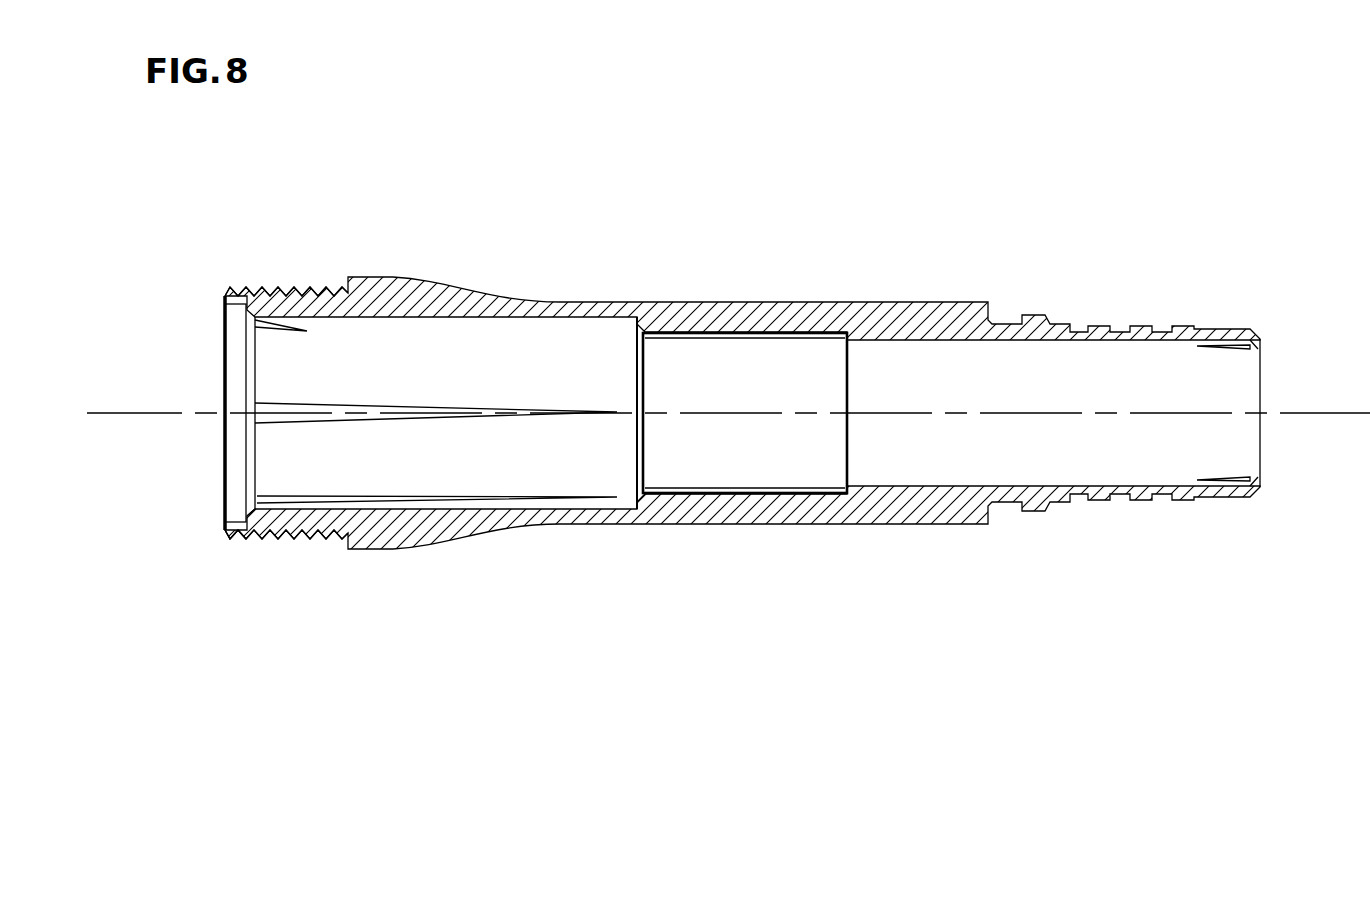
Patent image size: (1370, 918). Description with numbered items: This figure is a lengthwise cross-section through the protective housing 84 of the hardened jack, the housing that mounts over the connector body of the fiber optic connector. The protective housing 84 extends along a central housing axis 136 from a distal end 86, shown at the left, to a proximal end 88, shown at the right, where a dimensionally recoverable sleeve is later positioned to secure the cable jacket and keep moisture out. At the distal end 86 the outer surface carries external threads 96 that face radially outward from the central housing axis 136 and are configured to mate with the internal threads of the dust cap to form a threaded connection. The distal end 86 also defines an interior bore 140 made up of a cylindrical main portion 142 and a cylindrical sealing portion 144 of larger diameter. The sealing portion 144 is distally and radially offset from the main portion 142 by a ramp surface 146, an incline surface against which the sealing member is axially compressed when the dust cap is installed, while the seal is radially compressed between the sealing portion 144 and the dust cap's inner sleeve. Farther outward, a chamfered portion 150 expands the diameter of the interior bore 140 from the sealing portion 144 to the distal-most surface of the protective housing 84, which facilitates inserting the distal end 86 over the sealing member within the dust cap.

The protective housing 84 is at (640, 302).
The external threads 96 is at (280, 287).
The sealing portion 144 is at (237, 473).
The chamfered portion 150 is at (223, 440).
The distal end 86 is at (225, 528).
The ramp surface 146 is at (253, 518).
The interior bore 140 is at (273, 372).
The main portion 142 is at (468, 473).
The proximal end 88 is at (1253, 498).
The central housing axis 136 is at (115, 415).